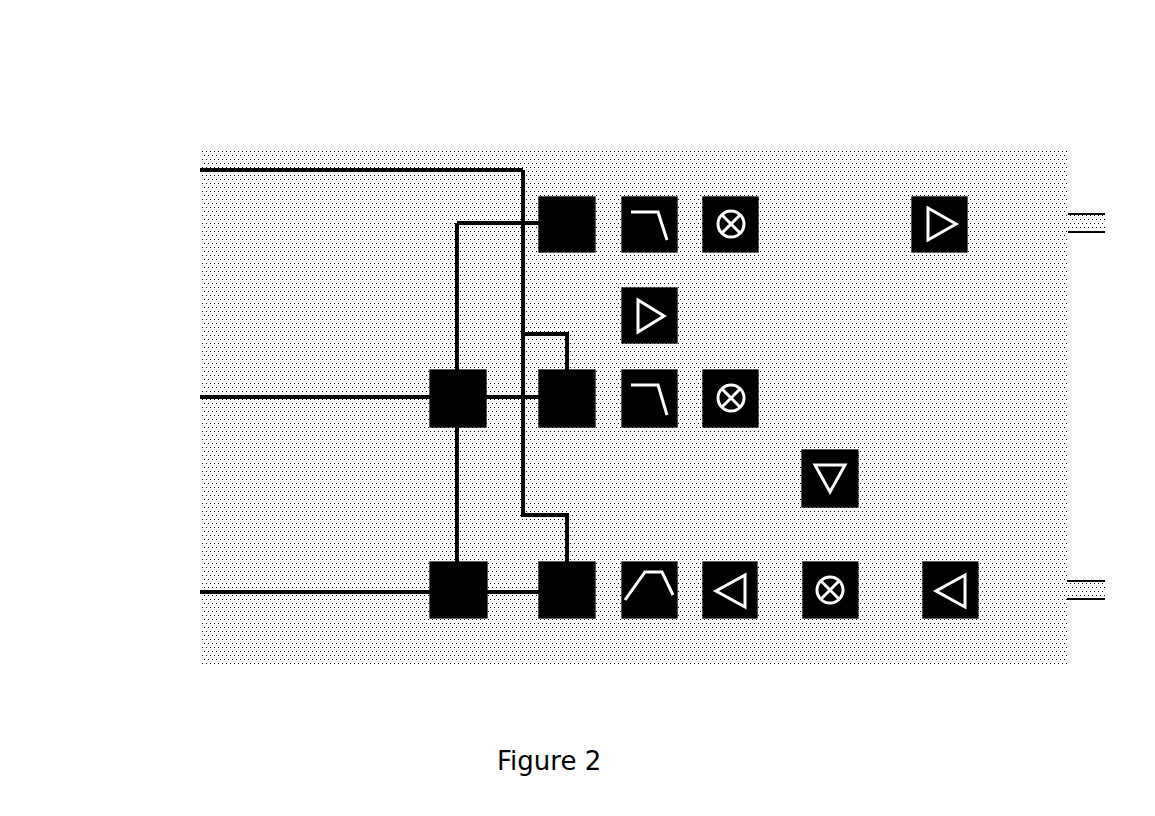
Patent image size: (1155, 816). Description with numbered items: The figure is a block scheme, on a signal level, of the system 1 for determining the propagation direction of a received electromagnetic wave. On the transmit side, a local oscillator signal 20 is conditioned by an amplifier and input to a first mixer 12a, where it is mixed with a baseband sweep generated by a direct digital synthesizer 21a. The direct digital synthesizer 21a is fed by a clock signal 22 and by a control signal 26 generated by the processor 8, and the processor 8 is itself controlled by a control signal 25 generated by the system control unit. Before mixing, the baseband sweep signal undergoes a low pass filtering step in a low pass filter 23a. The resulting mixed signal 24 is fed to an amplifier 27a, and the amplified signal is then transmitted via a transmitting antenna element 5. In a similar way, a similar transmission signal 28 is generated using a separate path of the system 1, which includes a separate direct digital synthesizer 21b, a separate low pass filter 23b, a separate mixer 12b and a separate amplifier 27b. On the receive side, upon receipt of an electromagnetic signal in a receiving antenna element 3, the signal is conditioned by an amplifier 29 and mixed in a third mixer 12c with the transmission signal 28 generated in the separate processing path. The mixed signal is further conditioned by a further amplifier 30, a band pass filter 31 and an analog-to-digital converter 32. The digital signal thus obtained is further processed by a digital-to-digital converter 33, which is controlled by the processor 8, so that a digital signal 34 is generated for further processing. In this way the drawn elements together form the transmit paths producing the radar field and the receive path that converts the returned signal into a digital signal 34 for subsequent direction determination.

The system 1 is at (903, 110).
The receiving antenna element 3 is at (1085, 581).
The transmitting antenna element 5 is at (1078, 222).
The processor 8 is at (447, 427).
The first mixer 12a is at (757, 212).
The separate mixer 12b is at (742, 427).
The third mixer 12c is at (847, 600).
The local oscillator signal 20 is at (222, 316).
The direct digital synthesizer 21a is at (587, 197).
The separate direct digital synthesizer 21b is at (576, 427).
The clock signal 22 is at (315, 170).
The low pass filter 23a is at (640, 224).
The separate low pass filter 23b is at (640, 408).
The mixed signal 24 is at (837, 223).
The control signal 25 is at (295, 400).
The control signal 26 is at (455, 277).
The amplifier 27a is at (955, 195).
The separate amplifier 27b is at (910, 476).
The transmission signal 28 is at (830, 545).
The amplifier 29 is at (963, 577).
The further amplifier 30 is at (738, 605).
The band pass filter 31 is at (637, 612).
The analog-to-digital converter 32 is at (558, 612).
The digital-to-digital converter 33 is at (455, 600).
The digital signal 34 is at (322, 594).